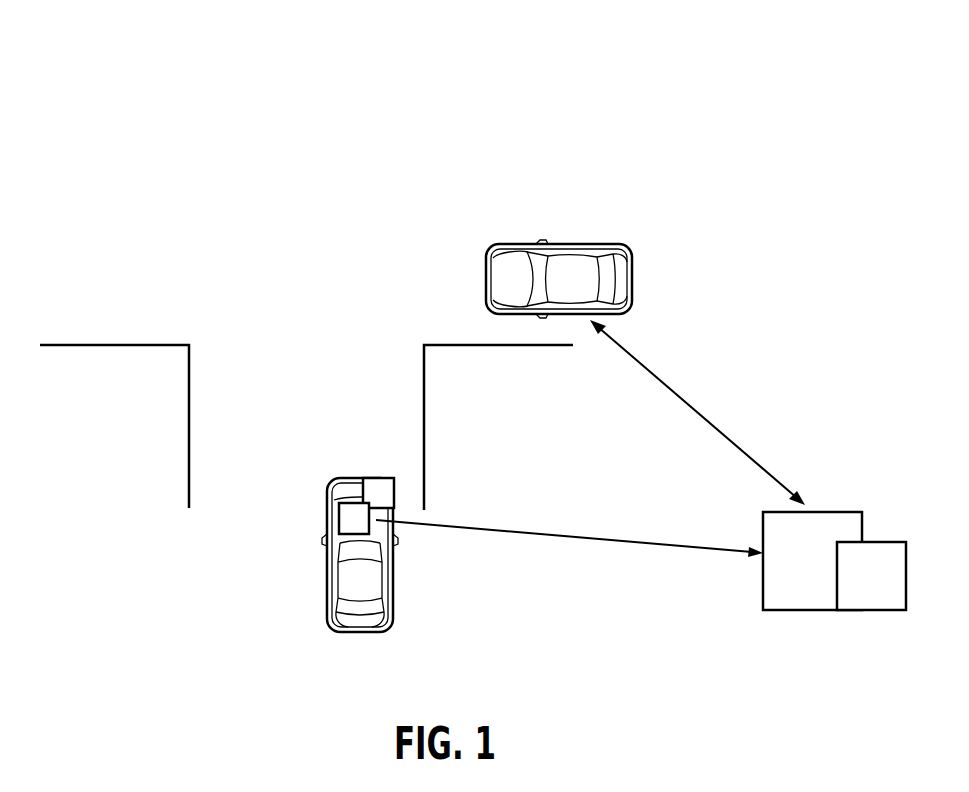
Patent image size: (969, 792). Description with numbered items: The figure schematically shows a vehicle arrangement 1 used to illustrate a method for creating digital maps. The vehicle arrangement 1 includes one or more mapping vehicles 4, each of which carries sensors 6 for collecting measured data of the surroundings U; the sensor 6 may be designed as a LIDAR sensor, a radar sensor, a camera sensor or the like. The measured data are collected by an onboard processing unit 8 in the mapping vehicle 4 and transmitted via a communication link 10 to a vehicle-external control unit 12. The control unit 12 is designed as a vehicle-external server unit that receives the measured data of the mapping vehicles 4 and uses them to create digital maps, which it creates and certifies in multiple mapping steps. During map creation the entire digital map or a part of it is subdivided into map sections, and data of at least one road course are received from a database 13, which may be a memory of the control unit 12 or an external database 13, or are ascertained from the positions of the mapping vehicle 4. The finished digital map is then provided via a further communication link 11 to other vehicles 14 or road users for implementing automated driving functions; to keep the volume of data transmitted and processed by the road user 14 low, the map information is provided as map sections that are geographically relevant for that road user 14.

The vehicle arrangement 1 is at (660, 122).
The mapping vehicle 4 is at (345, 600).
The sensor 6 is at (378, 486).
The onboard processing unit 8 is at (347, 518).
The communication link 10 is at (551, 533).
The further communication link 11 is at (690, 406).
The control unit 12 is at (823, 580).
The database 13 is at (883, 598).
The vehicle 14 is at (510, 262).
The surroundings U is at (160, 315).